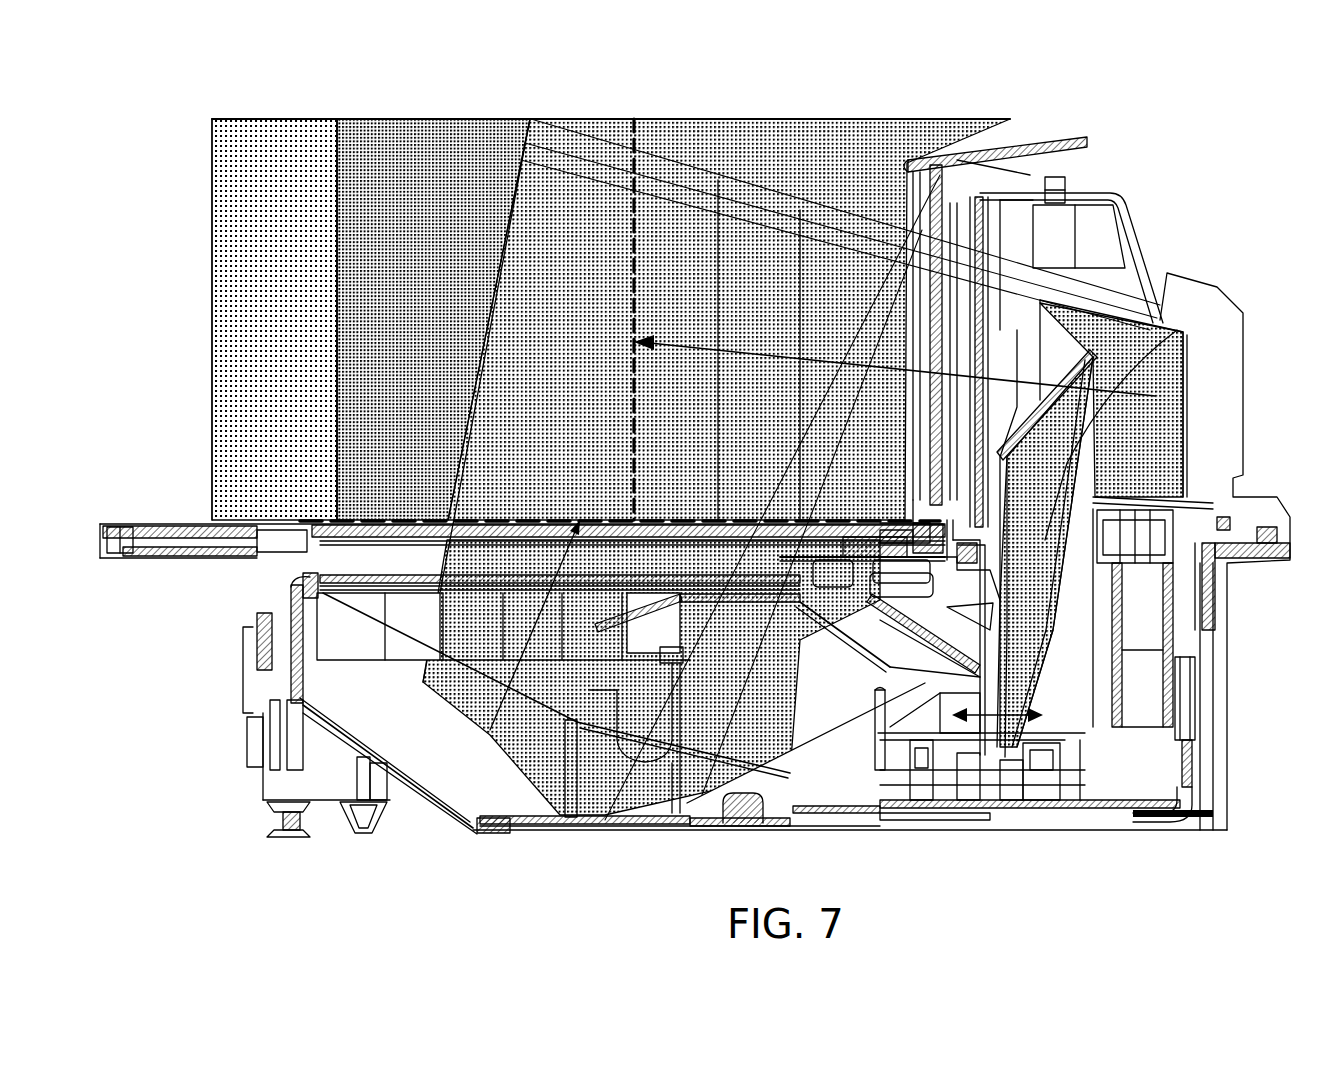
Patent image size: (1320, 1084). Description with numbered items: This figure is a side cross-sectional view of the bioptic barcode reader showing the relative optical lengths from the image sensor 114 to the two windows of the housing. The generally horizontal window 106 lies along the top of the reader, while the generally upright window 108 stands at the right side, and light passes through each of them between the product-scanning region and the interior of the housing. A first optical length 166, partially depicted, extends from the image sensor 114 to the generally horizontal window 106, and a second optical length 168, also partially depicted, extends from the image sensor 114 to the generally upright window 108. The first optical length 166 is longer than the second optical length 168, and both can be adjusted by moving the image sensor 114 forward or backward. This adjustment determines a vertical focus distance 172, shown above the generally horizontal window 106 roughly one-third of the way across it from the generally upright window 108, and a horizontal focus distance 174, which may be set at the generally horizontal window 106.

The generally horizontal window 106 is at (272, 648).
The generally upright window 108 is at (980, 230).
The image sensor 114 is at (982, 813).
The first optical length 166 is at (590, 520).
The second optical length 168 is at (1155, 360).
The vertical focus distance 172 is at (637, 138).
The horizontal focus distance 174 is at (462, 503).